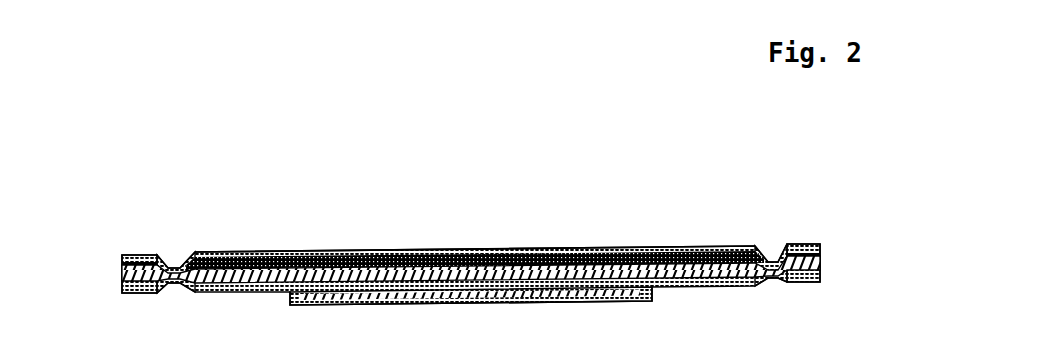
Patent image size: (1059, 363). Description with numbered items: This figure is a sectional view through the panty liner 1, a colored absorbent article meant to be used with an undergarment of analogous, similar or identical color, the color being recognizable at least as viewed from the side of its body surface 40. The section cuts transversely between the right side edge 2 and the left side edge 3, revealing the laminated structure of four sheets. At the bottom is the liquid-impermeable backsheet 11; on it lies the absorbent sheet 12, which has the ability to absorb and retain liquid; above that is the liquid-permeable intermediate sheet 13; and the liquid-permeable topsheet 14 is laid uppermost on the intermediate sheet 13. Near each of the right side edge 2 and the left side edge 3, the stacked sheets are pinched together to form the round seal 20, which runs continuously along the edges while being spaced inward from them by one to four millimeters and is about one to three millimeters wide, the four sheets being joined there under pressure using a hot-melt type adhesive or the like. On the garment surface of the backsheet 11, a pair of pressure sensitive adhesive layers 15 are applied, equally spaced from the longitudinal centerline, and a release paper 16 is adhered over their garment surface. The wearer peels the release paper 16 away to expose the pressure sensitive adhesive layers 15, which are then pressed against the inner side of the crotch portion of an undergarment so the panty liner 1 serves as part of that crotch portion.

The panty liner 1 is at (639, 189).
The right side edge 2 is at (122, 277).
The left side edge 3 is at (820, 270).
The liquid-impermeable backsheet 11 is at (693, 287).
The absorbent sheet 12 is at (243, 292).
The liquid-permeable intermediate sheet 13 is at (397, 268).
The liquid-permeable topsheet 14 is at (455, 251).
The pressure sensitive adhesive layer 15 is at (331, 306).
The release paper 16 is at (428, 305).
The round seal 20 is at (173, 269).
The body surface 40 is at (543, 251).